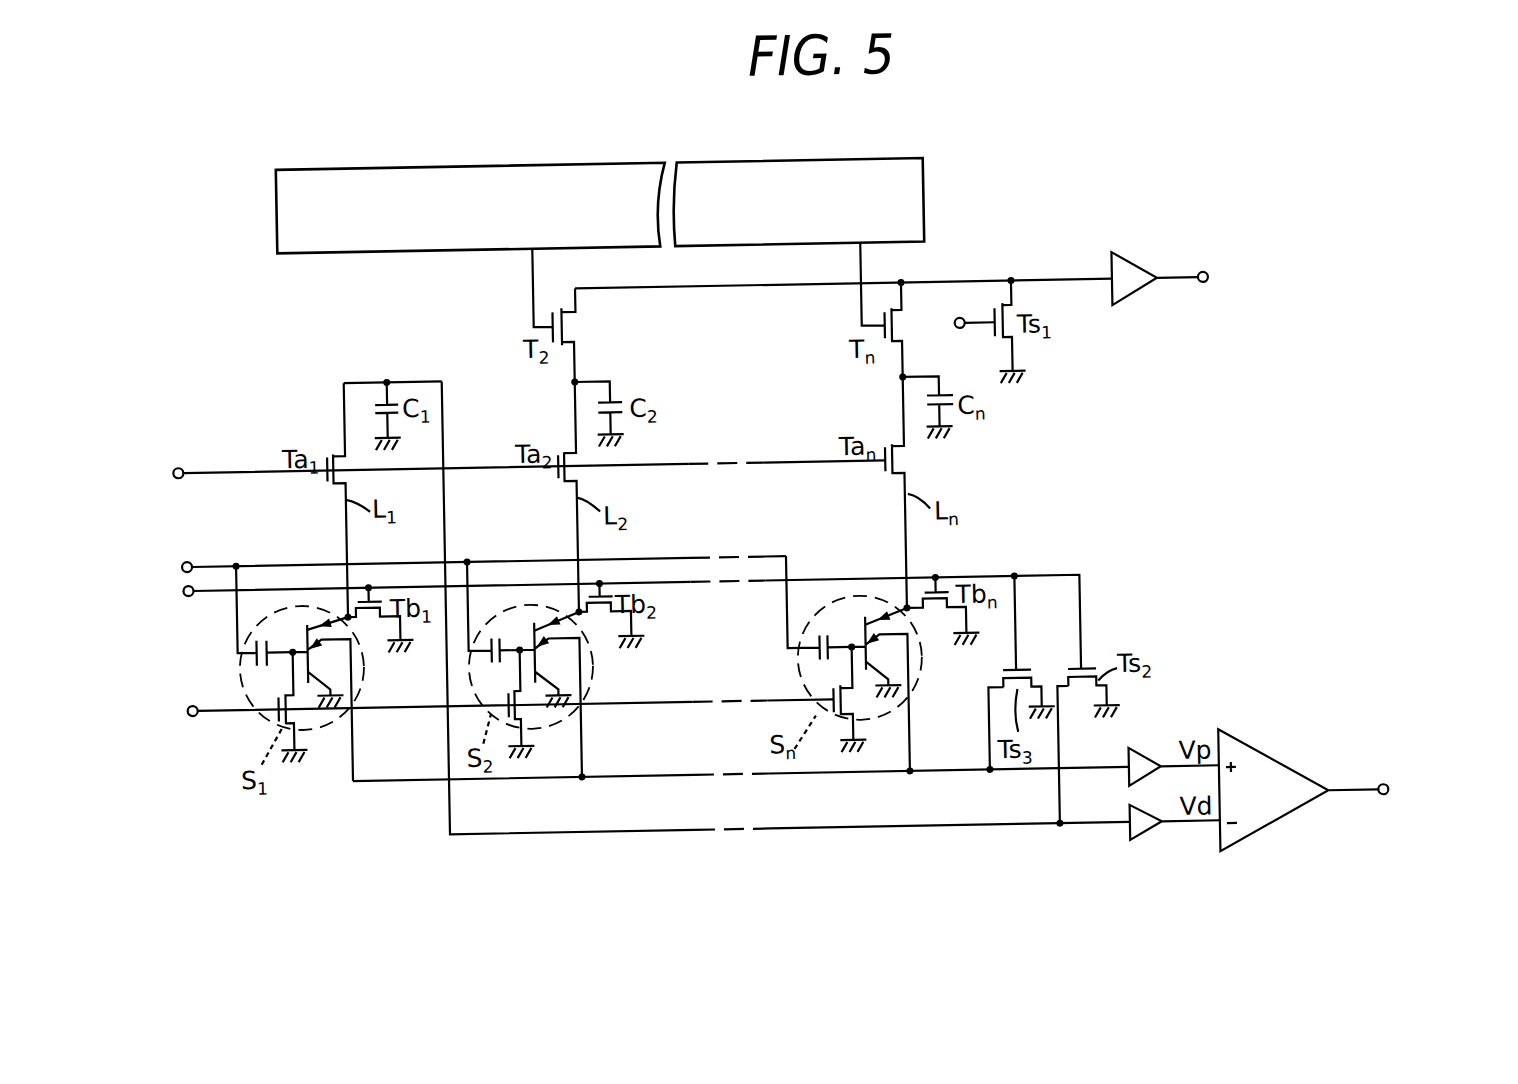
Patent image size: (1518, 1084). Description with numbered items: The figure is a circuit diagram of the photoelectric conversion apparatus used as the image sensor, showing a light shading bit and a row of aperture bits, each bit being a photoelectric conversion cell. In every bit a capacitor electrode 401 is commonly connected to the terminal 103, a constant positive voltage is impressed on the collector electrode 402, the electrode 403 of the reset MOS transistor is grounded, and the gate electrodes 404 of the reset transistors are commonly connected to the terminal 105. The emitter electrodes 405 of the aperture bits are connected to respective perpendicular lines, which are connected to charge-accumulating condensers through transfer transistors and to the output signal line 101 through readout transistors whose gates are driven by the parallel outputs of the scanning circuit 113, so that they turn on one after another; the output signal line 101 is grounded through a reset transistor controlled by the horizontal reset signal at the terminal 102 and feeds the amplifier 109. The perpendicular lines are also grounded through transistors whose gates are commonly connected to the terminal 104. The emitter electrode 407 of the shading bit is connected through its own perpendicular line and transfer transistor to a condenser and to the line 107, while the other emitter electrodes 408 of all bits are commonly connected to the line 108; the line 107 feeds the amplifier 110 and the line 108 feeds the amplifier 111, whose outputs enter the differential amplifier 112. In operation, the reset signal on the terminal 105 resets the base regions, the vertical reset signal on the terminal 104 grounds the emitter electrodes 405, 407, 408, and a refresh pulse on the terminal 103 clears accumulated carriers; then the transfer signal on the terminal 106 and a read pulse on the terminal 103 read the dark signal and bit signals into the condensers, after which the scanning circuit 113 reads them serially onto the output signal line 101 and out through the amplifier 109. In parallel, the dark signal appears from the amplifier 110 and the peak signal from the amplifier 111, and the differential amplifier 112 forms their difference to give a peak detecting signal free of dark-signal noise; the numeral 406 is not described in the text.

The output signal line 101 is at (990, 287).
The terminal 102 is at (961, 325).
The terminal 103 is at (187, 555).
The terminal 104 is at (188, 590).
The terminal 105 is at (190, 710).
The terminal 106 is at (180, 461).
The line 107 is at (958, 834).
The line 108 is at (866, 779).
The amplifier 109 is at (1146, 272).
The amplifier 110 is at (1138, 851).
The amplifier 111 is at (1145, 758).
The differential amplifier 112 is at (1262, 764).
The scanning circuit 113 is at (888, 164).
The capacitor electrode 401 is at (236, 632).
The collector electrode 402 is at (340, 688).
The electrode of the reset MOS transistor 403 is at (294, 735).
The gate electrode 404 is at (230, 708).
The emitter electrode 405 is at (574, 610).
The output emitter 406 is at (580, 655).
The emitter electrode 407 is at (344, 610).
The other emitter electrode 408 is at (350, 666).